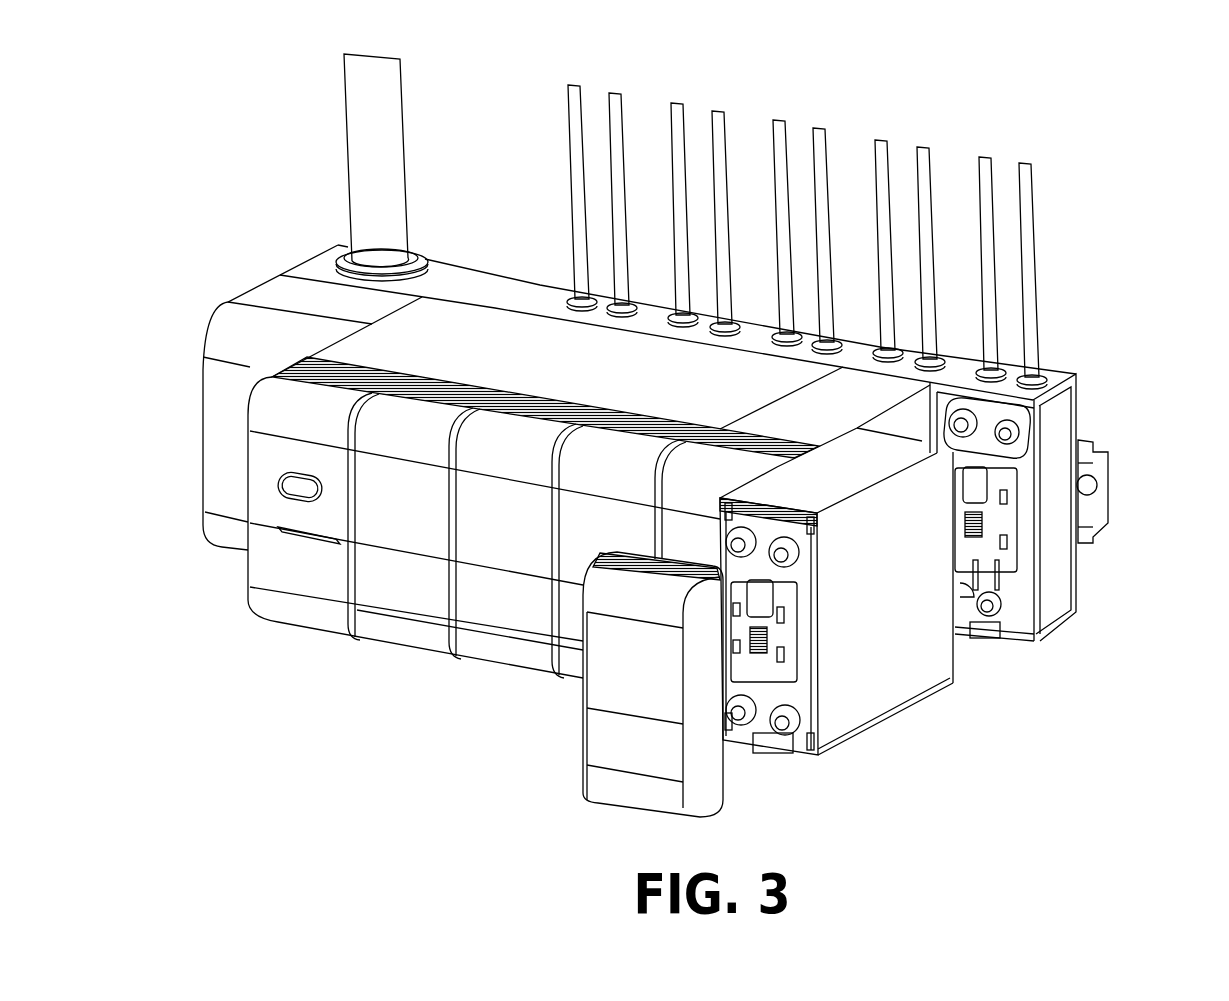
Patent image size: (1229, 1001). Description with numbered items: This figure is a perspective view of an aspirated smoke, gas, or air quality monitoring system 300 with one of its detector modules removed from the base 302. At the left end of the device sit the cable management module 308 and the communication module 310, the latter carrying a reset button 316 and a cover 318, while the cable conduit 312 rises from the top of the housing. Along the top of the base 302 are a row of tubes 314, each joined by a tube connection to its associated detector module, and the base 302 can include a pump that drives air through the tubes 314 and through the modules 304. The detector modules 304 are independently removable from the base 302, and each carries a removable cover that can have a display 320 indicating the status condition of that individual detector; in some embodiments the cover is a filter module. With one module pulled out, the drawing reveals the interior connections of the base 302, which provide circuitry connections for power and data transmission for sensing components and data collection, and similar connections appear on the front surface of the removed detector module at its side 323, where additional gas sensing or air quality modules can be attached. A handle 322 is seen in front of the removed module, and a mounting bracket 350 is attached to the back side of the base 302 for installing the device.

The system 300 is at (1131, 196).
The base 302 is at (492, 286).
The modules 304 is at (400, 425).
The cable management module 308 is at (215, 378).
The communication module 310 is at (273, 413).
The cable conduit 312 is at (365, 170).
The tubes 314 is at (575, 168).
The reset button 316 is at (288, 487).
The cover 318 is at (265, 570).
The display 320 is at (383, 590).
The handle 322 is at (653, 684).
The side 323 is at (965, 658).
The mounting bracket 350 is at (1100, 472).